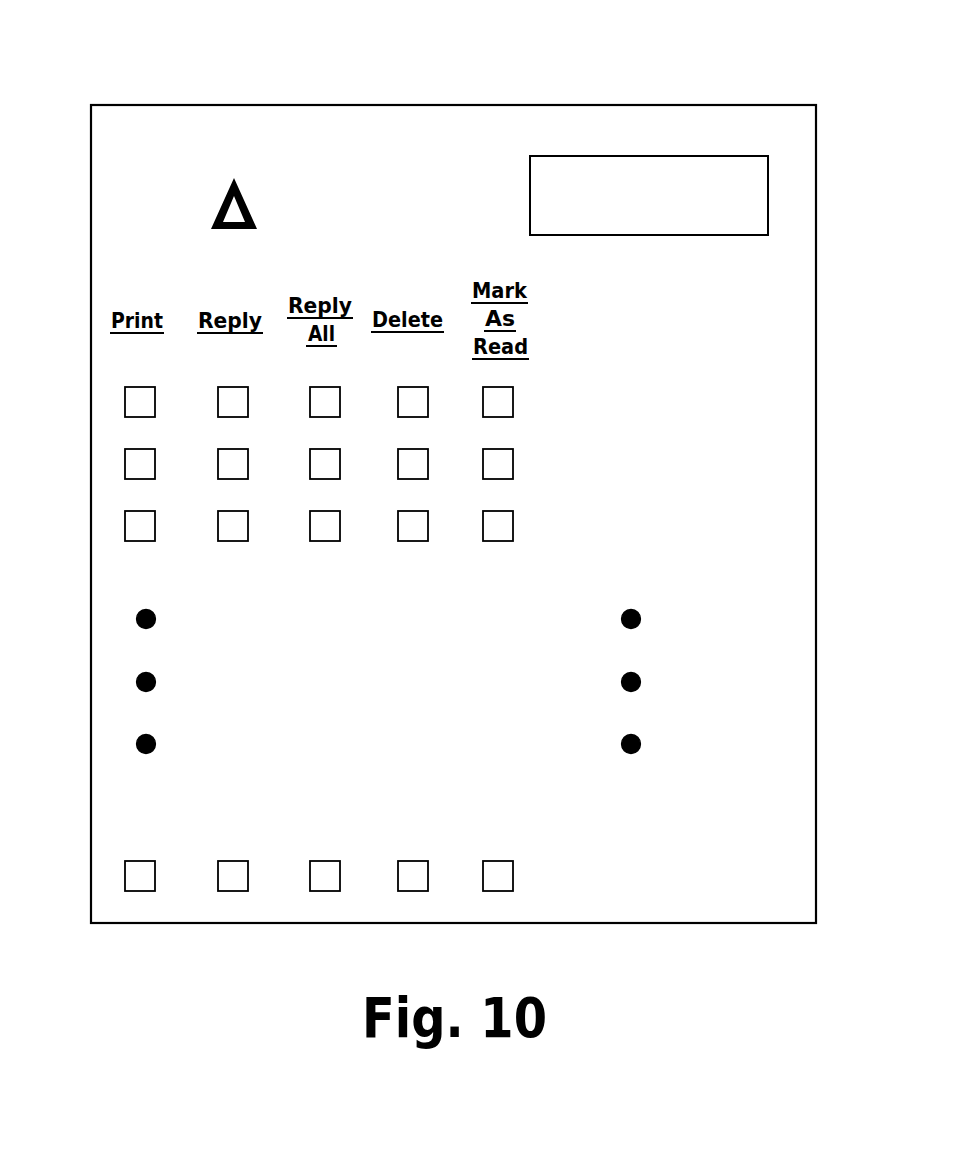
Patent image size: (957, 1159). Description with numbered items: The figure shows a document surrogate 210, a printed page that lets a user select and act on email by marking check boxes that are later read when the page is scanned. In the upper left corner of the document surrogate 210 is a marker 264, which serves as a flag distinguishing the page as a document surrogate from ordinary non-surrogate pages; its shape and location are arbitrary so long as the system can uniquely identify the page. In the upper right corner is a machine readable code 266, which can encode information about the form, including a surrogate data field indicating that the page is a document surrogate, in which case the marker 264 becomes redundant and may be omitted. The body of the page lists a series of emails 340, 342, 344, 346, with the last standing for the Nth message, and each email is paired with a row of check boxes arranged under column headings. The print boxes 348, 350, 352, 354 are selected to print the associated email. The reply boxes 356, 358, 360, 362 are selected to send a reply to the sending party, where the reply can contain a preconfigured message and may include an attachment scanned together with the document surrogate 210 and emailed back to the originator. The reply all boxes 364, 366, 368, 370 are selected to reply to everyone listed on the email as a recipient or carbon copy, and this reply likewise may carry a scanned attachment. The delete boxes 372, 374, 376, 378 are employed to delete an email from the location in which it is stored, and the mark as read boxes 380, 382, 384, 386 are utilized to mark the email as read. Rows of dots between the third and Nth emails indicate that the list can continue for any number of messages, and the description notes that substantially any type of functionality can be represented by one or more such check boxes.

The document surrogate 210 is at (453, 475).
The marker 264 is at (153, 182).
The machine readable code 266 is at (602, 182).
The email 340 is at (718, 372).
The email 342 is at (718, 442).
The email 344 is at (718, 508).
The email 346 is at (721, 845).
The print box 348 is at (96, 385).
The print box 350 is at (96, 447).
The print box 352 is at (96, 509).
The print box 354 is at (96, 859).
The reply box 356 is at (187, 385).
The reply box 358 is at (187, 447).
The reply box 360 is at (187, 509).
The reply box 362 is at (187, 859).
The reply all box 364 is at (280, 385).
The reply all box 366 is at (280, 447).
The reply all box 368 is at (280, 509).
The reply all box 370 is at (280, 859).
The delete box 372 is at (370, 385).
The delete box 374 is at (370, 447).
The delete box 376 is at (370, 509).
The delete box 378 is at (370, 859).
The mark as read box 380 is at (456, 385).
The mark as read box 382 is at (456, 447).
The mark as read box 384 is at (456, 509).
The mark as read box 386 is at (456, 859).